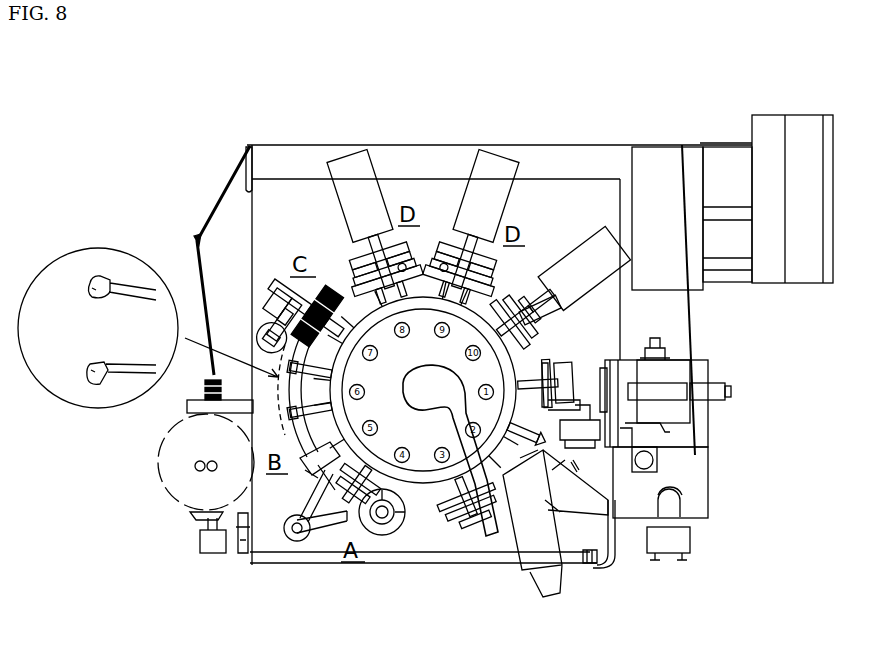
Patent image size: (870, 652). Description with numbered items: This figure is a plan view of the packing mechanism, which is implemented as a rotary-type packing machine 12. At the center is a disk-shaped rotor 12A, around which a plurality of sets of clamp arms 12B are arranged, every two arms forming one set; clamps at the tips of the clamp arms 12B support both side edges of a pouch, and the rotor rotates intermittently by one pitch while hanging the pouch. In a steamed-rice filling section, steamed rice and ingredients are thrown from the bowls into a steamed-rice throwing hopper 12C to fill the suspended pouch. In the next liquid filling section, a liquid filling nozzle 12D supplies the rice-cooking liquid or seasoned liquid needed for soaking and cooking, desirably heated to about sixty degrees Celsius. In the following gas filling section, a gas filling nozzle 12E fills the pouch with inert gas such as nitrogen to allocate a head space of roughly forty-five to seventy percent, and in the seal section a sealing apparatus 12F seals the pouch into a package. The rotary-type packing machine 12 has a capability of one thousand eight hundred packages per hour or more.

The rotary-type packing machine 12 is at (592, 112).
The disk-shaped rotor 12A is at (490, 374).
The clamp arms 12B is at (110, 360).
The steamed-rice throwing hopper 12C is at (393, 537).
The liquid filling nozzle 12D is at (307, 474).
The gas filling nozzle 12E is at (300, 286).
The sealing apparatus 12F is at (483, 169).